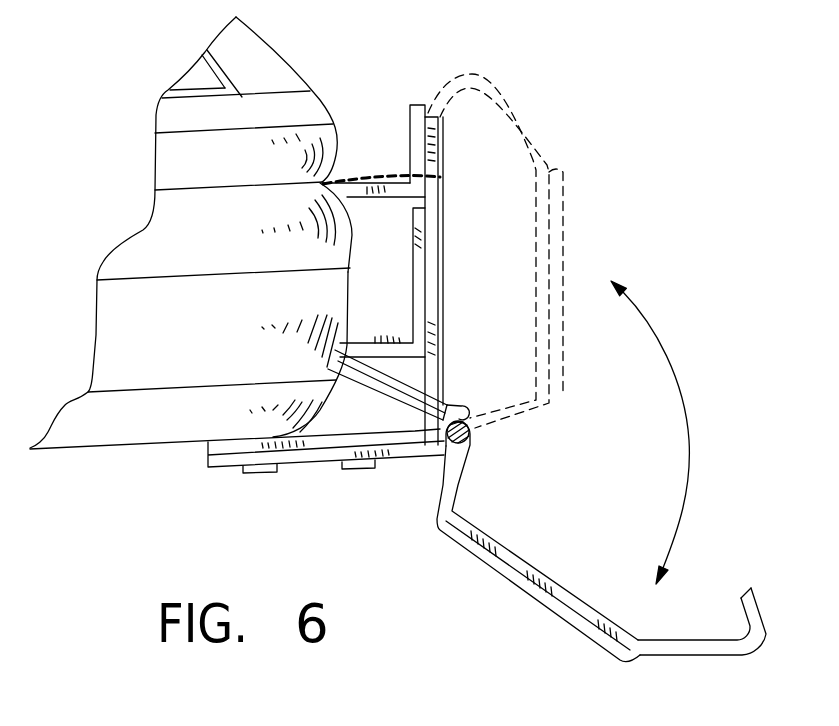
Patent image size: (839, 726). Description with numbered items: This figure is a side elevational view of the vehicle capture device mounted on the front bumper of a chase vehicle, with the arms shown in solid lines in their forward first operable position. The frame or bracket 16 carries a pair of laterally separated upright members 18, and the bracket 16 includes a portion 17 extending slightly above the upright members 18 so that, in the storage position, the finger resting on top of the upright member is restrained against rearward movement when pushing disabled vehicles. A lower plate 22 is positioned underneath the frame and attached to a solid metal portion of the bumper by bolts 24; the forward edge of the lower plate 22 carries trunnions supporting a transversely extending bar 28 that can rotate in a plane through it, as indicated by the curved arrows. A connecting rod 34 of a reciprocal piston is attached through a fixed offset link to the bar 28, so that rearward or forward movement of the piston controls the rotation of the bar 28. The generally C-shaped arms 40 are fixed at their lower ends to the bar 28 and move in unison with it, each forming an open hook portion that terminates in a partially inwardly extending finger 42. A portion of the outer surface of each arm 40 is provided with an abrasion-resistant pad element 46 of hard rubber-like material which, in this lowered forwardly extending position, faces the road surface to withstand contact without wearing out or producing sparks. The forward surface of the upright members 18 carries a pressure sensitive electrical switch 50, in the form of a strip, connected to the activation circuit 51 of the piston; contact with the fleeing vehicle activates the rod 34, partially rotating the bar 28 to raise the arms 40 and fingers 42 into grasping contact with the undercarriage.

The frame 16 is at (410, 317).
The portion 17 is at (415, 104).
The upright members 18 is at (427, 128).
The lower plate 22 is at (209, 468).
The bolts 24 is at (357, 473).
The bar 28 is at (470, 432).
The connecting rod 34 is at (386, 380).
The arms 40 is at (687, 659).
The finger 42 is at (758, 606).
The pad element 46 is at (483, 565).
The pressure sensitive electrical switch 50 is at (440, 202).
The activation circuit 51 is at (382, 173).